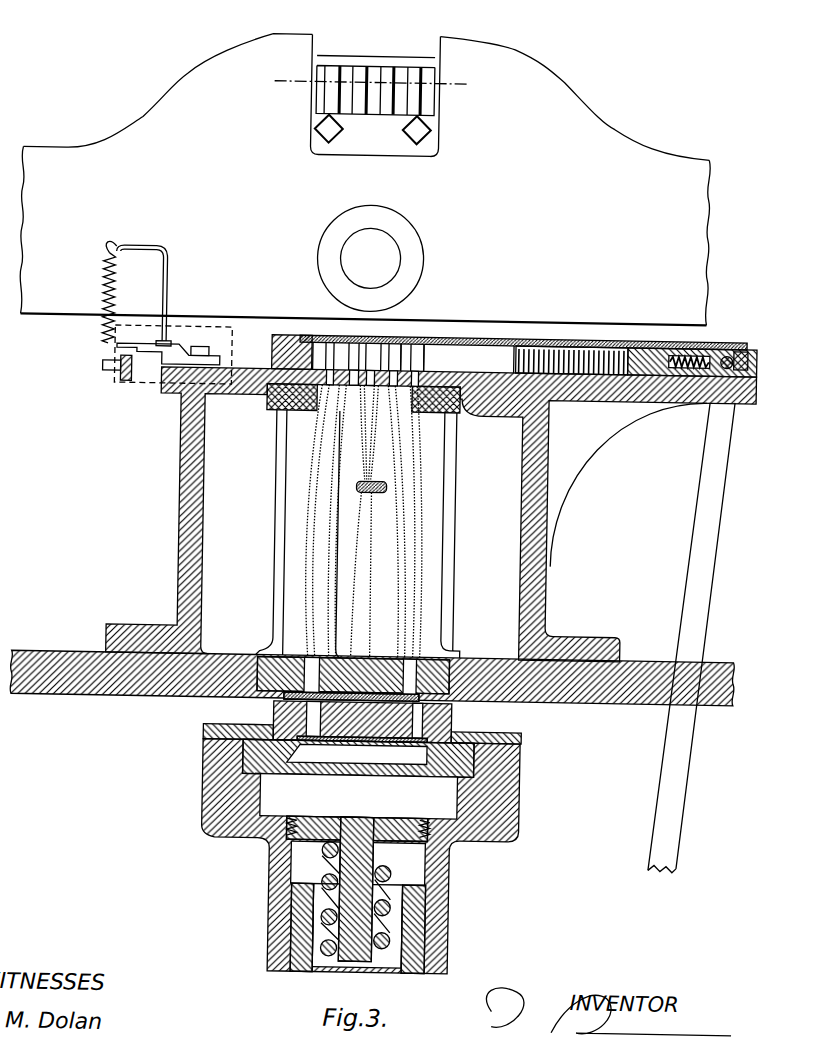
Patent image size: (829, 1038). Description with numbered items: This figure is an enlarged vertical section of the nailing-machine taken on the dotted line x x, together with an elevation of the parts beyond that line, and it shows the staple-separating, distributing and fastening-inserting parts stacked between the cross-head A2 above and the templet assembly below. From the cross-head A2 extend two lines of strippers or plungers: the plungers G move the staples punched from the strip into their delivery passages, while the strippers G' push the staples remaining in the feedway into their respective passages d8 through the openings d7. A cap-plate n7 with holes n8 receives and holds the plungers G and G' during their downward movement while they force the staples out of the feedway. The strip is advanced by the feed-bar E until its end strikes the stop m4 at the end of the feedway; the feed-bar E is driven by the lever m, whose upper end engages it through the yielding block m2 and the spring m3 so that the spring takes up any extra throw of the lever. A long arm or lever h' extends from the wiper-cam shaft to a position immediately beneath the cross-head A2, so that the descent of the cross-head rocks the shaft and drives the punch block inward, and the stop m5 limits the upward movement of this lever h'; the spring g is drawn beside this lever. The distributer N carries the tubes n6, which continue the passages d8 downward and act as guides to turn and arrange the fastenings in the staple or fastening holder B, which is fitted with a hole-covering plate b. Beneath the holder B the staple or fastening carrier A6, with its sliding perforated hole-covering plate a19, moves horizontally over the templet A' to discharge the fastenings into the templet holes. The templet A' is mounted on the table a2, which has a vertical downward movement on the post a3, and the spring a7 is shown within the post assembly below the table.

The cross-head A2 is at (365, 177).
The strippers or plungers G is at (377, 95).
The strippers G' is at (383, 60).
The dotted section line x is at (377, 82).
The spring g is at (137, 293).
The stop m5 is at (173, 354).
The long arm or lever h' is at (117, 390).
The carriage body N is at (283, 402).
The stop m4 is at (521, 334).
The openings d7 is at (413, 365).
The holes n8 is at (400, 346).
The cap-plate n7 is at (440, 346).
The feed-bar E is at (645, 361).
The spring m3 is at (710, 357).
The yielding block m2 is at (747, 360).
The lever m is at (690, 571).
The tubes n6 is at (330, 558).
The passages d8 is at (354, 484).
The staple or fastening holder B is at (372, 667).
The hole-covering plate b is at (432, 700).
The table a2 is at (271, 909).
The staple or fastening carrier A6 is at (276, 712).
The templet A' is at (358, 779).
The sliding perforated hole-covering plate a19 is at (357, 754).
The post a3 is at (419, 963).
The spring coils a7 is at (330, 956).